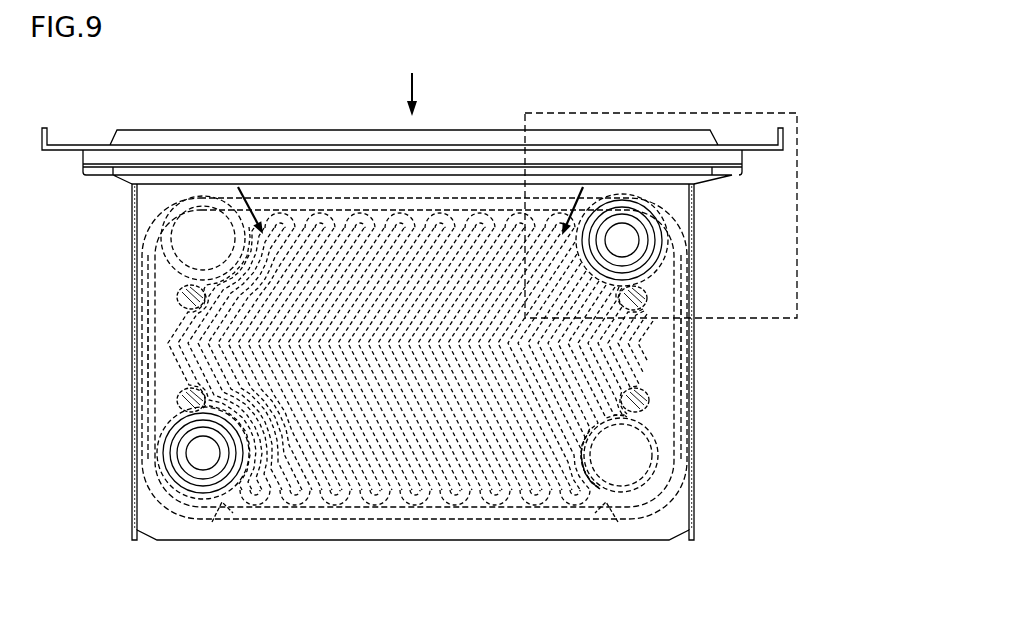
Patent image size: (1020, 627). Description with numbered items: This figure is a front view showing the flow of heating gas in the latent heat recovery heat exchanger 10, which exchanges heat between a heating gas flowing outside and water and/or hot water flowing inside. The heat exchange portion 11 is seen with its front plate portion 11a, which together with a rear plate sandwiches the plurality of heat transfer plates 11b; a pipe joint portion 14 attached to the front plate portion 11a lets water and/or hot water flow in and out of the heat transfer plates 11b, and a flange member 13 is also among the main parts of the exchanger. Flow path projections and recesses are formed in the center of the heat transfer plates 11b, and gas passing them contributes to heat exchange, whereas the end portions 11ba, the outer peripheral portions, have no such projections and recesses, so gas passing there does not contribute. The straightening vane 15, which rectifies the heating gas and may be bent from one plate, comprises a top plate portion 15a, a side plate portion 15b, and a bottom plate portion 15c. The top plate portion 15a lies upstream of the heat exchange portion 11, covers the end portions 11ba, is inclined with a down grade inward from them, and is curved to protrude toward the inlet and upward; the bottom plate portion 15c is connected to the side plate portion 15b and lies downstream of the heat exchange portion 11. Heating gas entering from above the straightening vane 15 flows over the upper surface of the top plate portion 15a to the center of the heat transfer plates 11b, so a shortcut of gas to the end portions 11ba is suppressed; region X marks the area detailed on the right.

The latent heat recovery heat exchanger 10 is at (727, 88).
The heat exchange portion 11 is at (145, 191).
The front plate portion 11a is at (146, 201).
The heat transfer plates 11b is at (178, 343).
The end portions 11ba is at (148, 372).
The flange member 13 is at (477, 138).
The pipe joint portion 14 is at (648, 238).
The straightening vane 15 is at (138, 274).
The top plate portion 15a is at (203, 196).
The side plate portion 15b is at (143, 398).
The bottom plate portion 15c is at (198, 524).
The region X is at (575, 113).